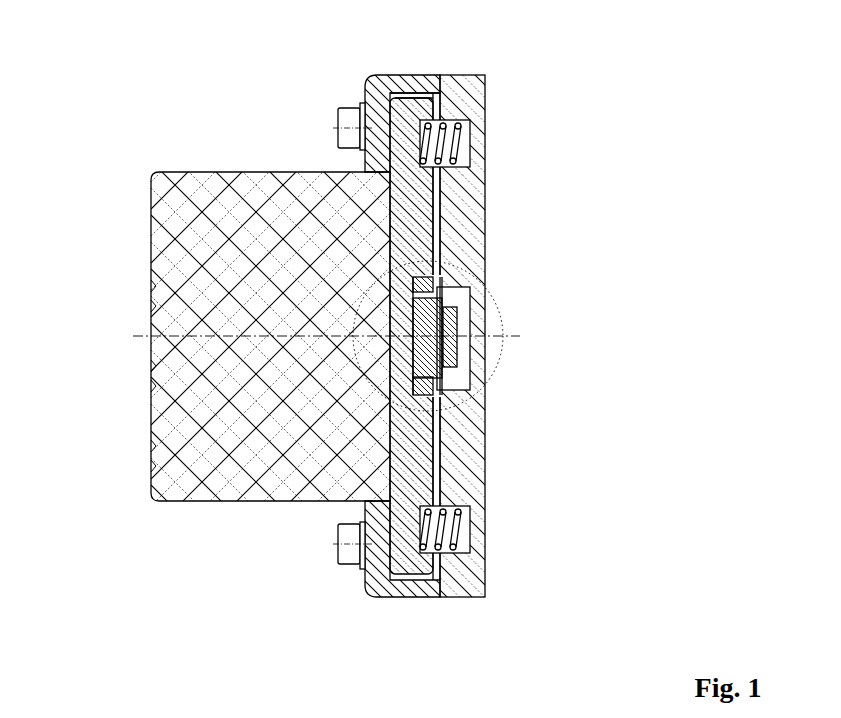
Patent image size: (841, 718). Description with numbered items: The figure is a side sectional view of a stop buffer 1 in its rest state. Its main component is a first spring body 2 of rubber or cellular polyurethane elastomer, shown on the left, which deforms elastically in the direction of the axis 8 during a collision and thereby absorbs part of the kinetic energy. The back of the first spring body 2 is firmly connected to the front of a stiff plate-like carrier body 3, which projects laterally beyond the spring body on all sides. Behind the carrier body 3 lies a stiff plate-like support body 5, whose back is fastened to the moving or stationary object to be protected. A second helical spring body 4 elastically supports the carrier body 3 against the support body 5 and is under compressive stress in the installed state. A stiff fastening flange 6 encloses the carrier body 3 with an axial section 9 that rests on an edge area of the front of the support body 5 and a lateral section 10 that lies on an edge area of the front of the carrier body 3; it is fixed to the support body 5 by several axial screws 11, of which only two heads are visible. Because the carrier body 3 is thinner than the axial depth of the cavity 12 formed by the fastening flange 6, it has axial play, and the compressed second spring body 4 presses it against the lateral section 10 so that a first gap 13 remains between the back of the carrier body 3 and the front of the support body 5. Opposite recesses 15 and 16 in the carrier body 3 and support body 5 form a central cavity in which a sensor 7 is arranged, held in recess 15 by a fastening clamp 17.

The stop buffer 1 is at (178, 102).
The first spring body 2 is at (183, 470).
The carrier body 3 is at (408, 562).
The second helical spring body 4 is at (470, 148).
The support body 5 is at (452, 578).
The fastening flange 6 is at (367, 593).
The sensor 7 is at (452, 293).
The axis 8 is at (142, 335).
The axial section 9 is at (417, 85).
The lateral section 10 is at (363, 95).
The axial screws 11 is at (348, 118).
The cavity 12 is at (423, 97).
The first gap 13 is at (437, 465).
The recess 15 is at (440, 396).
The recess 16 is at (457, 373).
The fastening clamp 17 is at (457, 328).